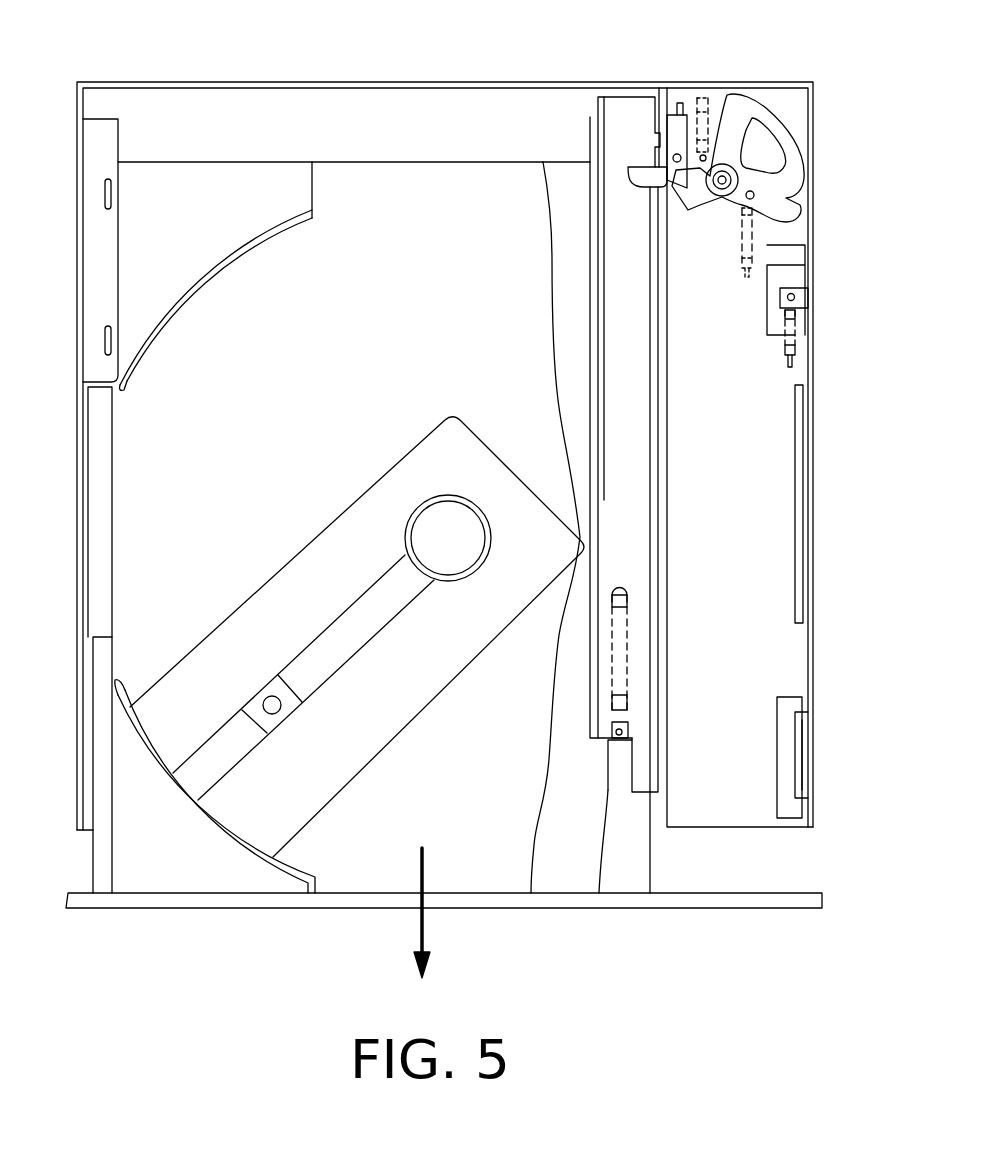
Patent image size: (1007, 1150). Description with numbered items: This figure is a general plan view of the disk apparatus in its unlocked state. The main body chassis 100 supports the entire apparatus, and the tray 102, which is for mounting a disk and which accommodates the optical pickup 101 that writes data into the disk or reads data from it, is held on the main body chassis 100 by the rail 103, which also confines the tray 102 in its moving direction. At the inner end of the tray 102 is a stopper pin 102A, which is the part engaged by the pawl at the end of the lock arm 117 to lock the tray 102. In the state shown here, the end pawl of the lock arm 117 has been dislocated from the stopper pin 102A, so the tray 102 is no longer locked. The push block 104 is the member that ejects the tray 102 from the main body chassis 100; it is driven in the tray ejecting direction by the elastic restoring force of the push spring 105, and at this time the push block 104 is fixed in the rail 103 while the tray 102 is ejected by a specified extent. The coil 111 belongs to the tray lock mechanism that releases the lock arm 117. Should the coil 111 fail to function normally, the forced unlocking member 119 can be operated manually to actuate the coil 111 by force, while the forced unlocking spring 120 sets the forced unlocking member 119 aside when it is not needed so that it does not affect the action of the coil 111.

The main body chassis 100 is at (288, 80).
The optical pickup 101 is at (258, 826).
The tray 102 is at (373, 192).
The stopper pin 102A is at (633, 165).
The rail 103 is at (625, 110).
The push block 104 is at (614, 778).
The push spring 105 is at (618, 636).
The coil 111 is at (775, 130).
The lock arm 117 is at (675, 118).
The forced unlocking member 119 is at (790, 748).
The forced unlocking spring 120 is at (797, 336).